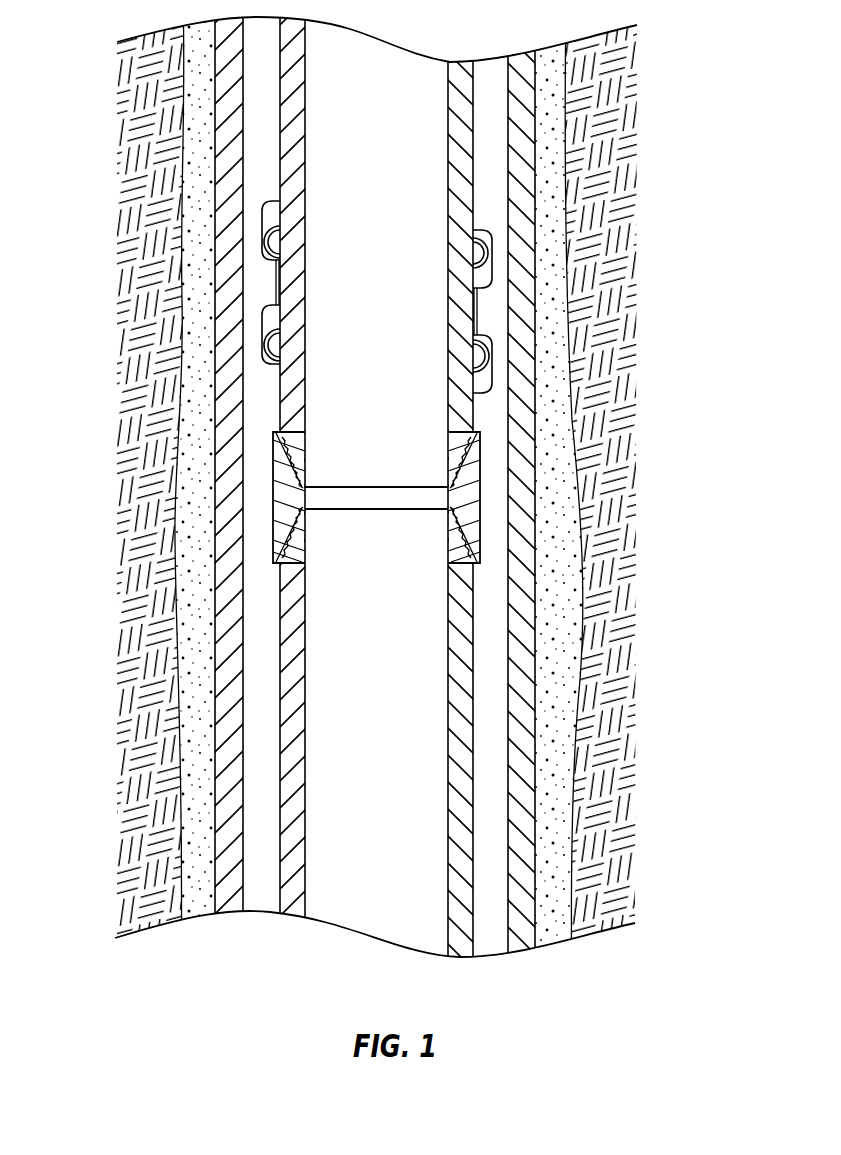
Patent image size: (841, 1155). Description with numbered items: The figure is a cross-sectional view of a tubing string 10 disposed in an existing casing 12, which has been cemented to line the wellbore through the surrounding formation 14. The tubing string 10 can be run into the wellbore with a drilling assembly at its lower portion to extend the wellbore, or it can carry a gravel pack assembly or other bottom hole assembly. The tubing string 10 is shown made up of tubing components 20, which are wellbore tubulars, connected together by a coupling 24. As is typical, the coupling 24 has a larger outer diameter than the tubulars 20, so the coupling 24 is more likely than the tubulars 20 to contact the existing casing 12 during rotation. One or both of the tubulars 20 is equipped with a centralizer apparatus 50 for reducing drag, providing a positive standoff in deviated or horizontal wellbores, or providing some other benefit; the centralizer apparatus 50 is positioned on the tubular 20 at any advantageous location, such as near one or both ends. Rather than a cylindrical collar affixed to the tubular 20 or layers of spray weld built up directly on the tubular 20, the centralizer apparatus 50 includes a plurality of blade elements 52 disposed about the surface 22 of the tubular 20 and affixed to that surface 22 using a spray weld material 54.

The tubing string 10 is at (500, 79).
The existing casing 12 is at (540, 72).
The subterranean formation 14 is at (577, 190).
The tubing components 20 is at (280, 103).
The surface 22 is at (280, 398).
The coupling 24 is at (273, 510).
The centralizer apparatus 50 is at (234, 315).
The blade elements 52 is at (258, 238).
The spray weld material 54 is at (477, 313).